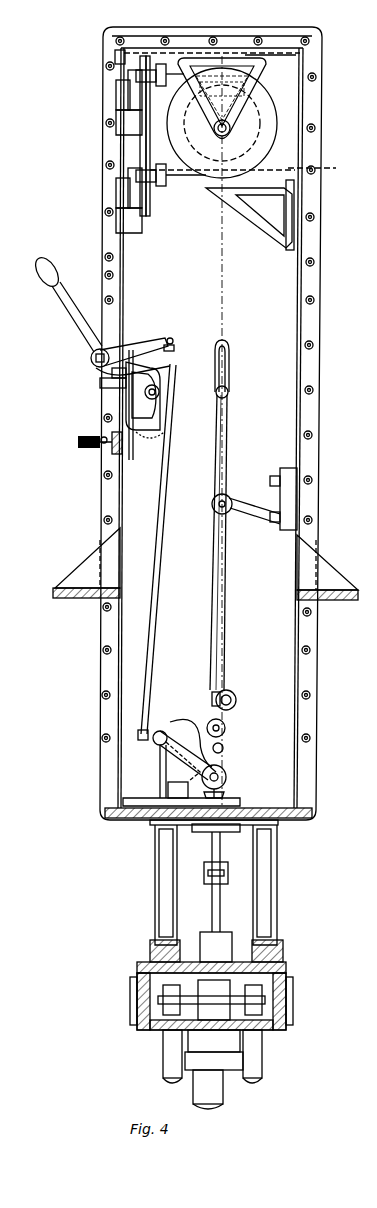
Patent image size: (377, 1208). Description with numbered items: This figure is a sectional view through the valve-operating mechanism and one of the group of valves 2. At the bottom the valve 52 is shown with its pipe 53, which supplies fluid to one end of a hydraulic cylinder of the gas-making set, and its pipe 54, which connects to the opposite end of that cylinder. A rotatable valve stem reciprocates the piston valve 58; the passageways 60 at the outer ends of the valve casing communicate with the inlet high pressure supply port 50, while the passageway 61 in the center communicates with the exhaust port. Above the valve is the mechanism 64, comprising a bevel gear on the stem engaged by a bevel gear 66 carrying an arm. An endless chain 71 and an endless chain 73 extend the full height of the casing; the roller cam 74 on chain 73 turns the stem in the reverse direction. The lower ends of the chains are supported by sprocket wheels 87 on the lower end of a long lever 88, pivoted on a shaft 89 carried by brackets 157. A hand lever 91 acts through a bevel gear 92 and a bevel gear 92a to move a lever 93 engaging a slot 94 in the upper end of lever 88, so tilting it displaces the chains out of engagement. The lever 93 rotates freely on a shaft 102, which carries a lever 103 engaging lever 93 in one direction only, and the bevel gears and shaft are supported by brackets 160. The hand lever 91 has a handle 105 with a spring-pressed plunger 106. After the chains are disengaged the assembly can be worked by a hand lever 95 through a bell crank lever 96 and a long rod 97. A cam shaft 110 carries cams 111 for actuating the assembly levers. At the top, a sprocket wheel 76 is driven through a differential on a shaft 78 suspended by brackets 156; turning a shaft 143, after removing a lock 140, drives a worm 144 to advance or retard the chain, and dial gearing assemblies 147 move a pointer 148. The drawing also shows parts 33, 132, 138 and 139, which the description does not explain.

The group of valves 2 is at (276, 964).
The base bracket 33 is at (156, 774).
The inlet high pressure supply port 50 is at (226, 1092).
The valve 52 is at (130, 972).
The pipe 53 is at (163, 1060).
The pipe 54 is at (262, 1060).
The piston valve 58 is at (284, 990).
The passageways 60 is at (290, 1010).
The passageway 61 is at (214, 1050).
The mechanism 64 is at (226, 783).
The bevel gear 66 is at (236, 698).
The endless chain 71 is at (228, 910).
The endless chain 73 is at (297, 430).
The roller cam 74 is at (226, 748).
The sprocket wheel 76 is at (252, 104).
The shaft 78 is at (222, 123).
The sprocket wheels 87 is at (226, 728).
The long lever 88 is at (218, 436).
The shaft 89 is at (218, 514).
The hand lever 91 is at (112, 418).
The bevel gear 92 is at (126, 396).
The bevel gear 92a is at (172, 338).
The lever 93 is at (232, 385).
The slot 94 is at (230, 349).
The hand lever 95 is at (92, 342).
The bell crank lever 96 is at (158, 342).
The long rod 97 is at (158, 496).
The shaft 102 is at (174, 360).
The lever 103 is at (148, 420).
The handle 105 is at (78, 448).
The spring-pressed plunger 106 is at (102, 448).
The cam shaft 110 is at (182, 706).
The cams 111 is at (196, 688).
The handle 132 is at (62, 296).
The base plate 138 is at (148, 824).
The bracket 139 is at (262, 222).
The lock 140 is at (112, 72).
The shaft 143 is at (166, 74).
The worm 144 is at (326, 168).
The dial gearing assemblies 147 is at (116, 96).
The pointer 148 is at (118, 125).
The brackets 156 is at (278, 50).
The brackets 157 is at (270, 540).
The brackets 160 is at (131, 447).